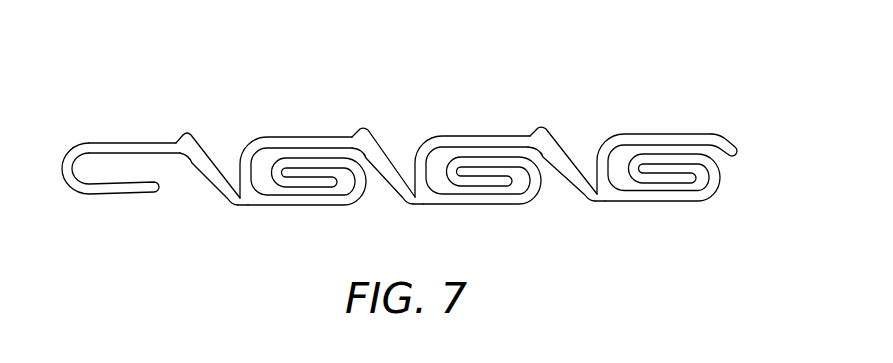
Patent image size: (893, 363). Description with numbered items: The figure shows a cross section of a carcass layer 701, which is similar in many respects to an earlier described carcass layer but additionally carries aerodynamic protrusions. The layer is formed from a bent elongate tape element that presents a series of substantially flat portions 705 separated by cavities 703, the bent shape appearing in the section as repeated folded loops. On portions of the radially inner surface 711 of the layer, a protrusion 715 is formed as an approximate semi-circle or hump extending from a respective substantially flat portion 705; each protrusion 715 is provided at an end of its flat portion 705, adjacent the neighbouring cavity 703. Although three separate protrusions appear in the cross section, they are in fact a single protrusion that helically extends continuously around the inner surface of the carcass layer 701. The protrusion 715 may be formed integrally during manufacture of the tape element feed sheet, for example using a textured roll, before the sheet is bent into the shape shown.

The carcass layer 701 is at (724, 99).
The radially inner surface 711 is at (88, 136).
The substantially flat portion 705 is at (413, 142).
The protrusion 715 is at (385, 137).
The cavity 703 is at (411, 227).